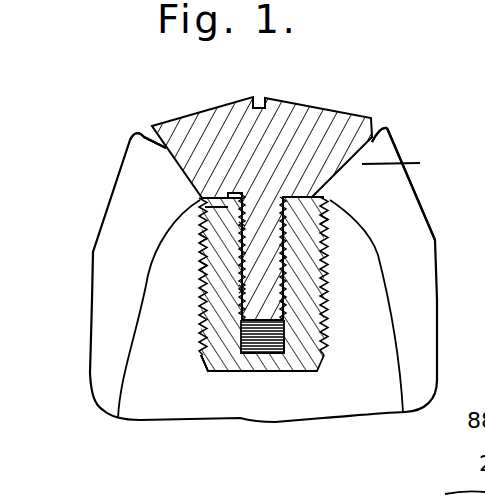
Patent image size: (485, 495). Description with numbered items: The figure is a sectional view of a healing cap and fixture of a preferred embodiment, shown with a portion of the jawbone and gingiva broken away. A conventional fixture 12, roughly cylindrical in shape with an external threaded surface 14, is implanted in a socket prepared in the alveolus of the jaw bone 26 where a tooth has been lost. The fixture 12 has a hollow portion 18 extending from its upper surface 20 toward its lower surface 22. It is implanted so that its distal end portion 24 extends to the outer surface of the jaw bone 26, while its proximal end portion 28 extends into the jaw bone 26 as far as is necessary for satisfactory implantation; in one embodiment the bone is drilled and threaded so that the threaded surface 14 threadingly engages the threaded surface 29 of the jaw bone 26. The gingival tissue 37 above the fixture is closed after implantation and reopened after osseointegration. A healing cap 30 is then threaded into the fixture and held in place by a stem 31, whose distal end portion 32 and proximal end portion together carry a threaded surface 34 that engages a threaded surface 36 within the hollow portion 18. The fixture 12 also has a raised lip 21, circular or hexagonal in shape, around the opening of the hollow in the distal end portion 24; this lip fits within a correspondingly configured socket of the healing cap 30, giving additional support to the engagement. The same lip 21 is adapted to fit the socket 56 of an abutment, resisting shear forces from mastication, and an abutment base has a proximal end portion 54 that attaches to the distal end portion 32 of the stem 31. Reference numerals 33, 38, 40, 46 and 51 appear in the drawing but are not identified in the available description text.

The fixture 12 is at (345, 318).
The threaded surface 14 is at (207, 262).
The hollow portion 18 is at (272, 355).
The upper surface 20 is at (305, 196).
The raised lip 21 is at (200, 200).
The lower surface 22 is at (253, 354).
The distal end portion 24 is at (182, 207).
The jaw bone 26 is at (330, 221).
The proximal end portion 28 is at (186, 341).
The threaded surface 29 is at (200, 333).
The healing cap 30 is at (146, 142).
The stem 31 is at (285, 349).
The distal end portion 32 is at (258, 222).
The post body 33 is at (268, 303).
The threaded surface 34 is at (228, 287).
The threaded surface 36 is at (296, 255).
The gingival tissue 37 is at (389, 129).
The cortical bone line 38 is at (420, 163).
The gingival margin 40 is at (385, 127).
The crown 46 is at (328, 109).
The crown slot 51 is at (260, 97).
The proximal end portion 54 is at (218, 318).
The socket 56 is at (206, 237).